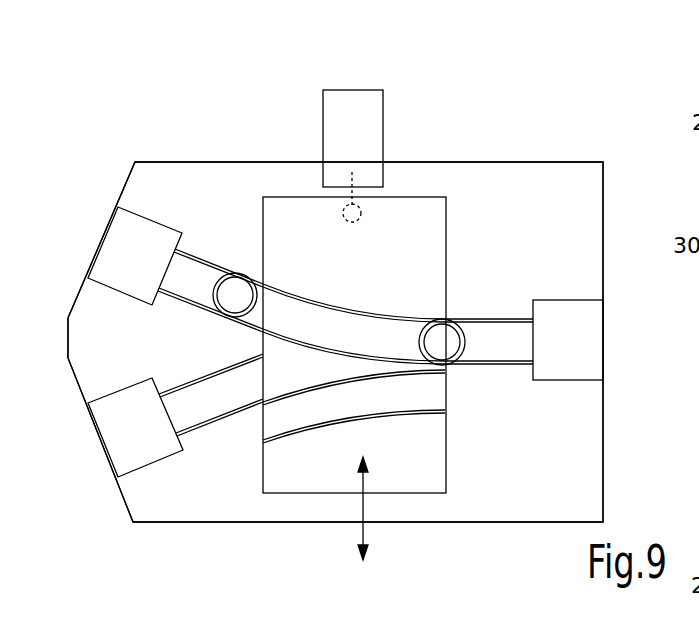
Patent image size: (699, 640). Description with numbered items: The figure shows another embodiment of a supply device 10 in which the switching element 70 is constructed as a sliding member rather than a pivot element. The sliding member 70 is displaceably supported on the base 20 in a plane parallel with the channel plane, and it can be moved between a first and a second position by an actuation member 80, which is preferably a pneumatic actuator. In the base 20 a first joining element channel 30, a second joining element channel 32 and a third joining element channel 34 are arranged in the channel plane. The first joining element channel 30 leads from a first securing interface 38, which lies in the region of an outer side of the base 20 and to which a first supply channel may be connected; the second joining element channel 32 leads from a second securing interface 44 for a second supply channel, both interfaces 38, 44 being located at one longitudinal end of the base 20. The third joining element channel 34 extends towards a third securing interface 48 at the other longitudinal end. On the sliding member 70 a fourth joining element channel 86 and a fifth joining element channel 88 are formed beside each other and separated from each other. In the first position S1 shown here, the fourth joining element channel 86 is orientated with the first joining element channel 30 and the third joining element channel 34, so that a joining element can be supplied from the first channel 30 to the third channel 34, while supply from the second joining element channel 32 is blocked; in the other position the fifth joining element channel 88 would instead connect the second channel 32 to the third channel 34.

The supply device 10 is at (615, 67).
The base 20 is at (572, 247).
The first joining element channel 30 is at (185, 273).
The second joining element channel 32 is at (208, 398).
The third joining element channel 34 is at (493, 340).
The first securing interface 38 is at (123, 248).
The second securing interface 44 is at (122, 430).
The third securing interface 48 is at (572, 338).
The switching element 70 is at (408, 510).
The actuation member 80 is at (355, 112).
The fourth joining element channel 86 is at (338, 325).
The fifth joining element channel 88 is at (293, 408).
The first position S1 is at (448, 463).